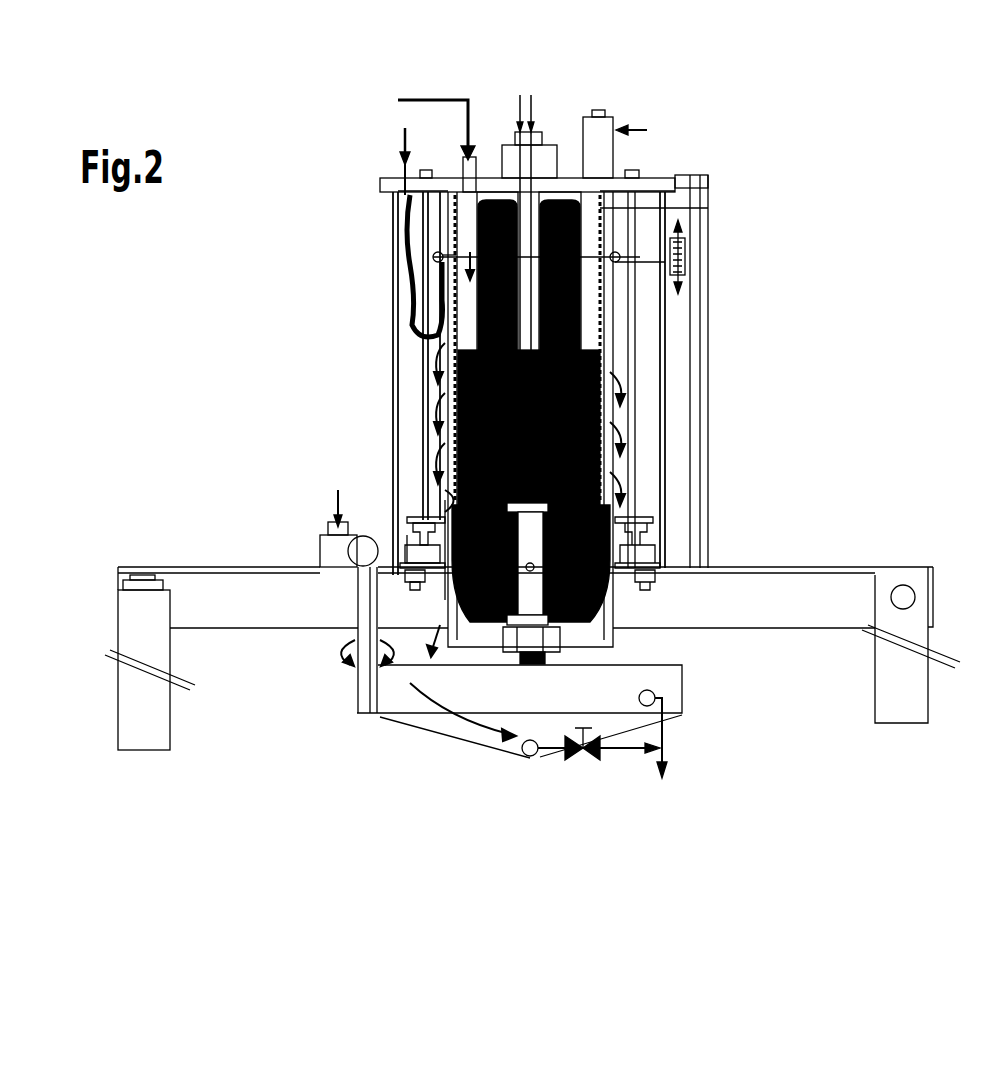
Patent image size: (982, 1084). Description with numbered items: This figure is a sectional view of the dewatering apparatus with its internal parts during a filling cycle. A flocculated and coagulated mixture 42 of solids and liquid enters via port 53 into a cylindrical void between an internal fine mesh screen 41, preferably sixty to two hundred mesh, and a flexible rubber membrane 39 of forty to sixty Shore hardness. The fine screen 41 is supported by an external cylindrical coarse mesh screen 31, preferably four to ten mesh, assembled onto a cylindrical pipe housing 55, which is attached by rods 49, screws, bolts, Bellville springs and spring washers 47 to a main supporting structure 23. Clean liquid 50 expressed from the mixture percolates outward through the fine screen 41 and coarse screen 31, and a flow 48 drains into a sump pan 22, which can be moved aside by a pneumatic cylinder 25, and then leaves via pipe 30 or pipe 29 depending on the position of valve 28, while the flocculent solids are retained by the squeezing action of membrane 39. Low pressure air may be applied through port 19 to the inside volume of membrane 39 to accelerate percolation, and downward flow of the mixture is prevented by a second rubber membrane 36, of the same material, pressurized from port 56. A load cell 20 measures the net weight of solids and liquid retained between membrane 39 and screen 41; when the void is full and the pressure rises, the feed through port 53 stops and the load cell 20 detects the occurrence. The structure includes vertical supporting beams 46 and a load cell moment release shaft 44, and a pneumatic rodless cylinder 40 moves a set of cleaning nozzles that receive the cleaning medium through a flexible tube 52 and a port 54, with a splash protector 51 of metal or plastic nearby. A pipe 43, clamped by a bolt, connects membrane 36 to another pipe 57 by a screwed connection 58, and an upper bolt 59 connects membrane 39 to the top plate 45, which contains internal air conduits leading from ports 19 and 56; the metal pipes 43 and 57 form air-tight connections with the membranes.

The port 19 is at (520, 110).
The port 56 is at (531, 110).
The port 54 is at (404, 178).
The port 53 is at (463, 160).
The upper bolt 59 is at (503, 160).
The top plate 45 is at (382, 185).
The flexible tube 52 is at (408, 230).
The splash protector 51 is at (396, 265).
The flocculated and coagulated mixture 42 is at (455, 328).
The liquid 50 is at (440, 400).
The rods 49 is at (425, 435).
The flow 48 is at (443, 495).
The spring washers 47 is at (392, 525).
The internal fine mesh screen 41 is at (607, 208).
The pneumatic rod less cylinder 40 is at (682, 257).
The external cylindrical coarse mesh screen 31 is at (608, 297).
The flexible rubber membrane 39 is at (600, 340).
The pipe 57 is at (615, 392).
The screwed connection 58 is at (513, 458).
The second rubber membrane 36 is at (531, 564).
The cylindrical pipe housing 55 is at (600, 630).
The pipe 43 is at (525, 660).
The pneumatic cylinder 25 is at (325, 548).
The load cell 20 is at (135, 580).
The vertical supporting beams 46 is at (125, 625).
The main supporting structure 23 is at (782, 566).
The load cell moment release shaft 44 is at (892, 590).
The sump pan 22 is at (662, 682).
The valve 28 is at (570, 743).
The pipe 29 is at (638, 752).
The pipe 30 is at (665, 745).